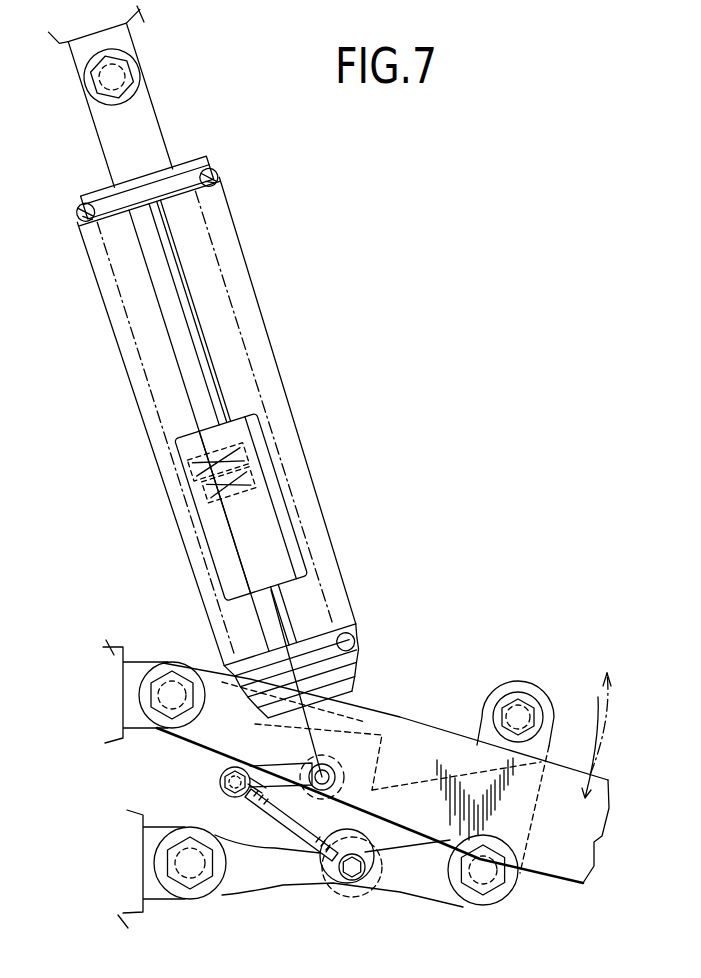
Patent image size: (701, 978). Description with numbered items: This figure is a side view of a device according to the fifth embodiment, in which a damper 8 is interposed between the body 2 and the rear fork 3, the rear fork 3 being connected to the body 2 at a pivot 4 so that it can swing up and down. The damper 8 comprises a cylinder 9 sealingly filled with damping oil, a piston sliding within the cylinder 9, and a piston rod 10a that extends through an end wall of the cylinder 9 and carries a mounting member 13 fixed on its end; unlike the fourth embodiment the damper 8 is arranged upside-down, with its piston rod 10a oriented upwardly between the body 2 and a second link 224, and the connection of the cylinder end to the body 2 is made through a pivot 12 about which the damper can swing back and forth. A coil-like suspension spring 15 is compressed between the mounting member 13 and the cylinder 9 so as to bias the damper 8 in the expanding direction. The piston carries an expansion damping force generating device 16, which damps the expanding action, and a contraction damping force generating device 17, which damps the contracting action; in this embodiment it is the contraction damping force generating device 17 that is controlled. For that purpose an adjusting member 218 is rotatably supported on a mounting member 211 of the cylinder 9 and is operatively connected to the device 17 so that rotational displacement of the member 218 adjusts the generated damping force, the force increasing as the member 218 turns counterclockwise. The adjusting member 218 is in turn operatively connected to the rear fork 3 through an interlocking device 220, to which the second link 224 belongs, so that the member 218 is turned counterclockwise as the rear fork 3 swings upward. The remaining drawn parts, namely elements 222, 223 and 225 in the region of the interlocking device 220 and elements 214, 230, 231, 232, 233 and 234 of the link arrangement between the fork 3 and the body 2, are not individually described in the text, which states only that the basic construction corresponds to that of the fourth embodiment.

The body 2 is at (116, 475).
The rear fork 3 is at (553, 870).
The pivot 4 is at (164, 672).
The damper 8 is at (293, 516).
The cylinder 9 is at (270, 458).
The piston rod 10a is at (183, 308).
The pivot 12 is at (96, 78).
The lower mounting member 13 is at (102, 145).
The suspension spring 15 is at (219, 178).
The expansion damping force generating device 16 is at (206, 452).
The contraction damping force generating device 17 is at (216, 486).
The mounting member 211 is at (370, 747).
The bracket edge 214 is at (368, 784).
The adjusting member 218 is at (314, 764).
The interlocking device 220 is at (222, 805).
The upper link 222 is at (258, 765).
The link pin 223 is at (357, 882).
The second link 224 is at (272, 826).
The link bolt 225 is at (226, 777).
The pivot bracket 230 is at (467, 721).
The lower arm 231 is at (280, 884).
The bracket bolt 232 is at (523, 703).
The lower pivot bolt 233 is at (190, 880).
The arm pivot bolt 234 is at (481, 888).